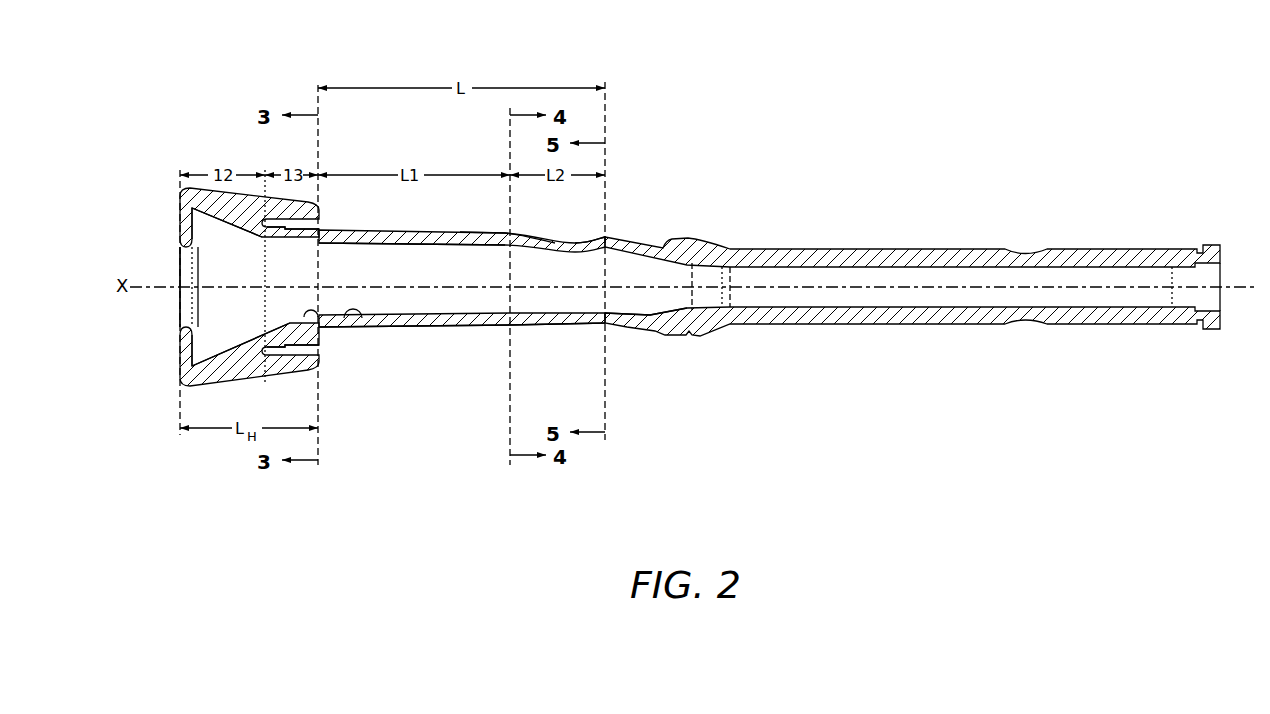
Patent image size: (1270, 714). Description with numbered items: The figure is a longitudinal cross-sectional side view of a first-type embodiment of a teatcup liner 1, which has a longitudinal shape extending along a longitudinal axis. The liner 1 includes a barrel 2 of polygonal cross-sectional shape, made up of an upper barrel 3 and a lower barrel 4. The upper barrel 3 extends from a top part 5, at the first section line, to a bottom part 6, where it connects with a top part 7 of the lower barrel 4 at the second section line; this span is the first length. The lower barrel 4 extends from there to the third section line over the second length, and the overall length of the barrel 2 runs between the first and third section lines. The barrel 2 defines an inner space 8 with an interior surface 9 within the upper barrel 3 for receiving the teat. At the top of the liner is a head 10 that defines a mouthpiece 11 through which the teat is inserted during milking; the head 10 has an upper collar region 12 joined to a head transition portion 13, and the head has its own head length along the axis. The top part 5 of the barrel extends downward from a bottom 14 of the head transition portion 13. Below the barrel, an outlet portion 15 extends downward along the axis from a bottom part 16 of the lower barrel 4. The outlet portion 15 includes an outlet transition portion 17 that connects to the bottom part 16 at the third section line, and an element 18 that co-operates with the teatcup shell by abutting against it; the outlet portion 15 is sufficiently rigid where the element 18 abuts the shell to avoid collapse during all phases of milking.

The teatcup liner 1 is at (803, 50).
The barrel 2 is at (605, 472).
The upper barrel 3 is at (510, 329).
The lower barrel 4 is at (605, 329).
The top part of the upper barrel 5 is at (330, 231).
The bottom part of the upper barrel 6 is at (493, 232).
The top part of the lower barrel 7 is at (523, 233).
The inner space 8 is at (390, 263).
The interior surface 9 is at (360, 320).
The head 10 is at (225, 116).
The mouthpiece 11 is at (179, 311).
The upper collar region 12 is at (217, 332).
The head transition portion 13 is at (283, 346).
The bottom of the head transition portion 14 is at (318, 320).
The outlet portion 15 is at (652, 323).
The bottom part of the lower barrel 16 is at (597, 235).
The outlet transition portion 17 is at (627, 240).
The element 18 is at (688, 333).